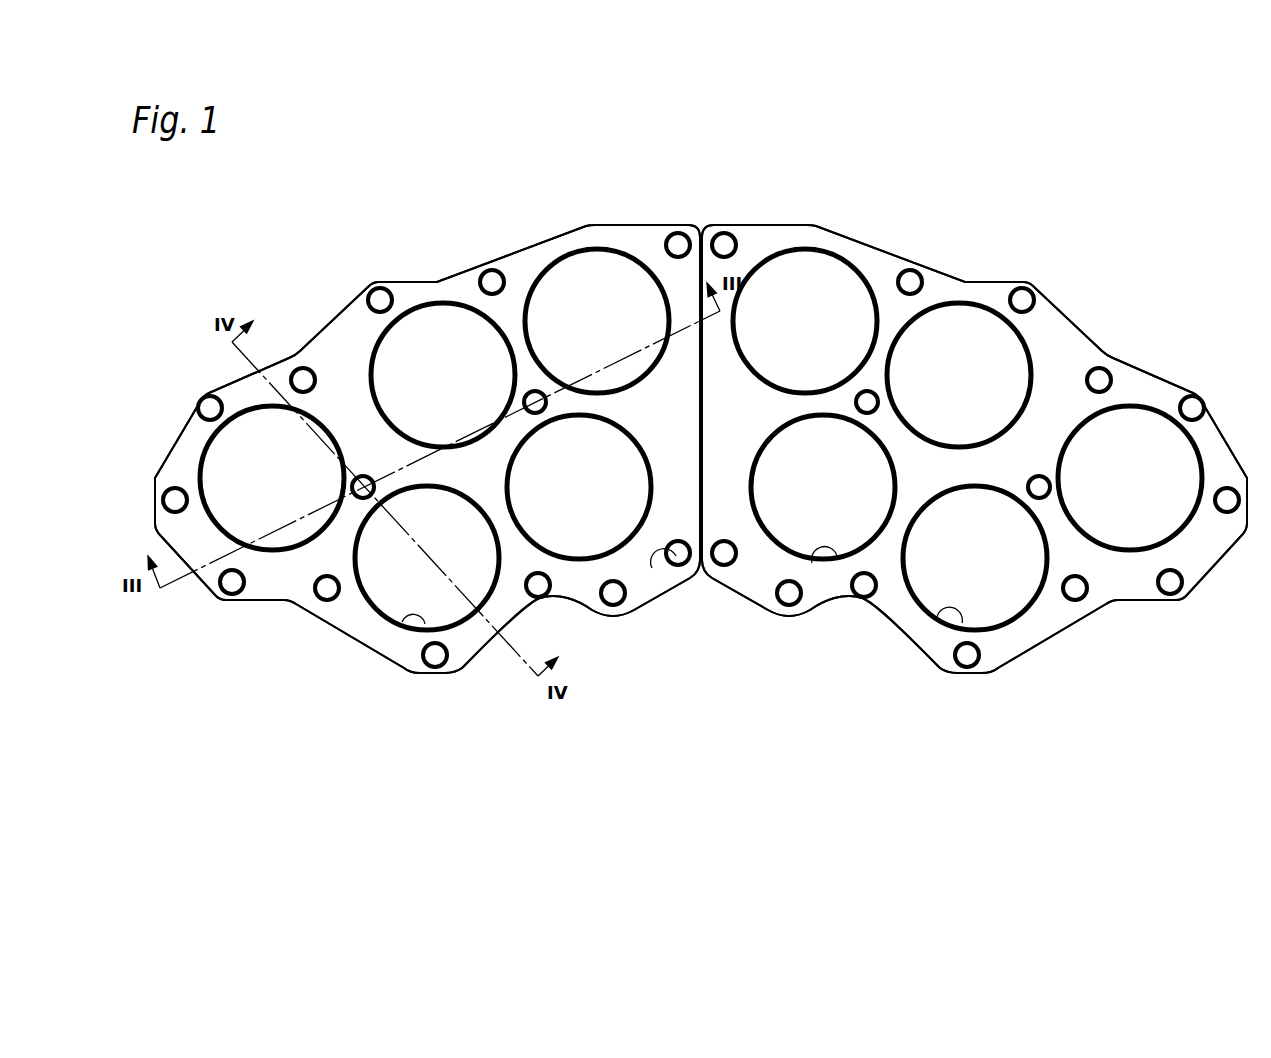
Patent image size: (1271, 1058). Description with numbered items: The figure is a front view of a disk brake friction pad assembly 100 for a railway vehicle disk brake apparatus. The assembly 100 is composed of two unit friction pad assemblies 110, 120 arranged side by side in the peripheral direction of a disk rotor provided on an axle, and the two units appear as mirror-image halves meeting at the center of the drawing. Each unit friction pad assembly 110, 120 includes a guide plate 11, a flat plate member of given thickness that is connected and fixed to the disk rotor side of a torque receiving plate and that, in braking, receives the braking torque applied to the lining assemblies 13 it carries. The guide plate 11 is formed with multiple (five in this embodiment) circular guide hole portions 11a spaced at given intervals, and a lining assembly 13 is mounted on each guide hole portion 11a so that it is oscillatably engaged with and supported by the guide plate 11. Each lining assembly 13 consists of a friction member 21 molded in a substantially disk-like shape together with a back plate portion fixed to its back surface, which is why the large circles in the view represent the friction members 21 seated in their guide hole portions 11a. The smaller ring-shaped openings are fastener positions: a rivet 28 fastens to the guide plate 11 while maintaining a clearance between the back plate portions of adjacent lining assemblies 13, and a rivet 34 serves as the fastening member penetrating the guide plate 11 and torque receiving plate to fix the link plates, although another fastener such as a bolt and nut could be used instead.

The disk brake friction pad assembly 100 is at (898, 238).
The unit friction pad assembly 110 is at (418, 270).
The unit friction pad assembly 120 is at (1080, 310).
The guide plate 11 is at (330, 348).
The guide hole portion 11a is at (402, 622).
The lining assembly 13 is at (366, 614).
The friction member 21 is at (828, 300).
The rivet 28 is at (378, 297).
The rivet 34 is at (533, 403).